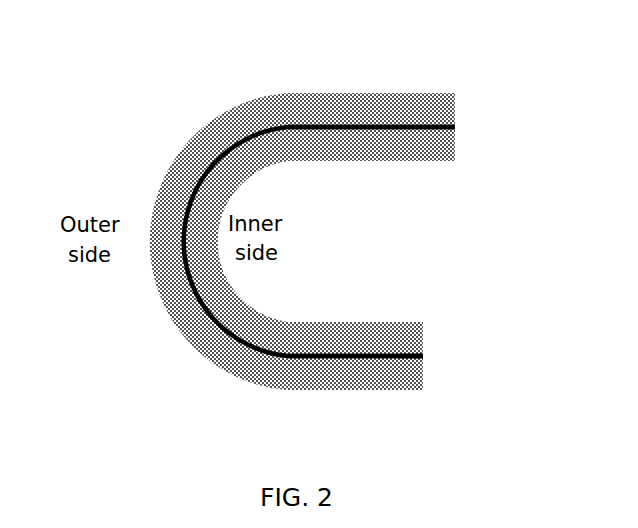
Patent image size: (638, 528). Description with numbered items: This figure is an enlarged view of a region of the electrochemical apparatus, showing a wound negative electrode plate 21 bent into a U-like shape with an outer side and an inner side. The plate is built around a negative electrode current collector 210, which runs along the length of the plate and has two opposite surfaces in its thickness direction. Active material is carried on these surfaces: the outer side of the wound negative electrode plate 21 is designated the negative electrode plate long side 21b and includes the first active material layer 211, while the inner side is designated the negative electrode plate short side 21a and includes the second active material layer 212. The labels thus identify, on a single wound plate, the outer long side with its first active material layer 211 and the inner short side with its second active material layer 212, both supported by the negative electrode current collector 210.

The negative electrode plate 21 is at (321, 238).
The negative electrode plate short side 21a is at (429, 166).
The negative electrode plate long side 21b is at (312, 391).
The negative electrode current collector 210 is at (413, 356).
The first active material layer 211 is at (247, 363).
The second active material layer 212 is at (312, 145).